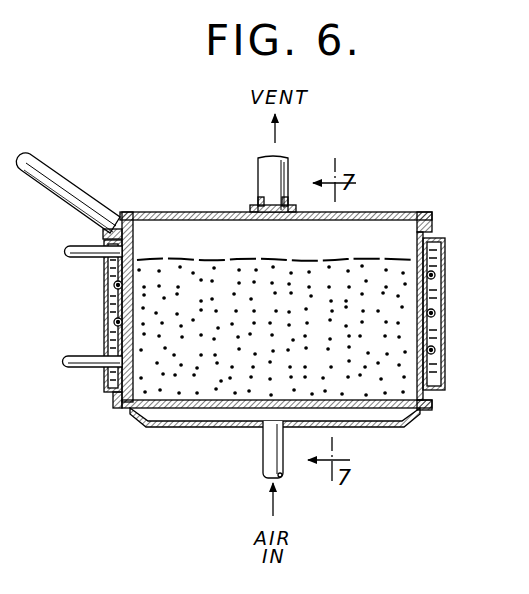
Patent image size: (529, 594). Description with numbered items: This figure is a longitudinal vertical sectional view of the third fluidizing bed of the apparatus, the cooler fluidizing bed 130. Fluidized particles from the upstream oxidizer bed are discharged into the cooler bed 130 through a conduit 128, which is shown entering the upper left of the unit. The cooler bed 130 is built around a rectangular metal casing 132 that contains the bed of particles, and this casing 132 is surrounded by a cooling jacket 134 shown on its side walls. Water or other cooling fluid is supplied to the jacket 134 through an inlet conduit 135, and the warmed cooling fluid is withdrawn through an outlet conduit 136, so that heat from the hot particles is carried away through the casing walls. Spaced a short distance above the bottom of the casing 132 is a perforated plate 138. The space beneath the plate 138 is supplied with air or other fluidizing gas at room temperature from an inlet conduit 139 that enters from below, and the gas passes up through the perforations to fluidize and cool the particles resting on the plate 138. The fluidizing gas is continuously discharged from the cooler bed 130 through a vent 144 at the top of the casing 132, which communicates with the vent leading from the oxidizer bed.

The conduit 128 is at (63, 176).
The cooler fluidizing bed 130 is at (424, 210).
The rectangular metal casing 132 is at (368, 211).
The cooling jacket 134 is at (446, 324).
The inlet conduit 135 is at (80, 258).
The outlet conduit 136 is at (82, 368).
The perforated plate 138 is at (189, 410).
The inlet conduit 139 is at (265, 451).
The vent 144 is at (258, 168).